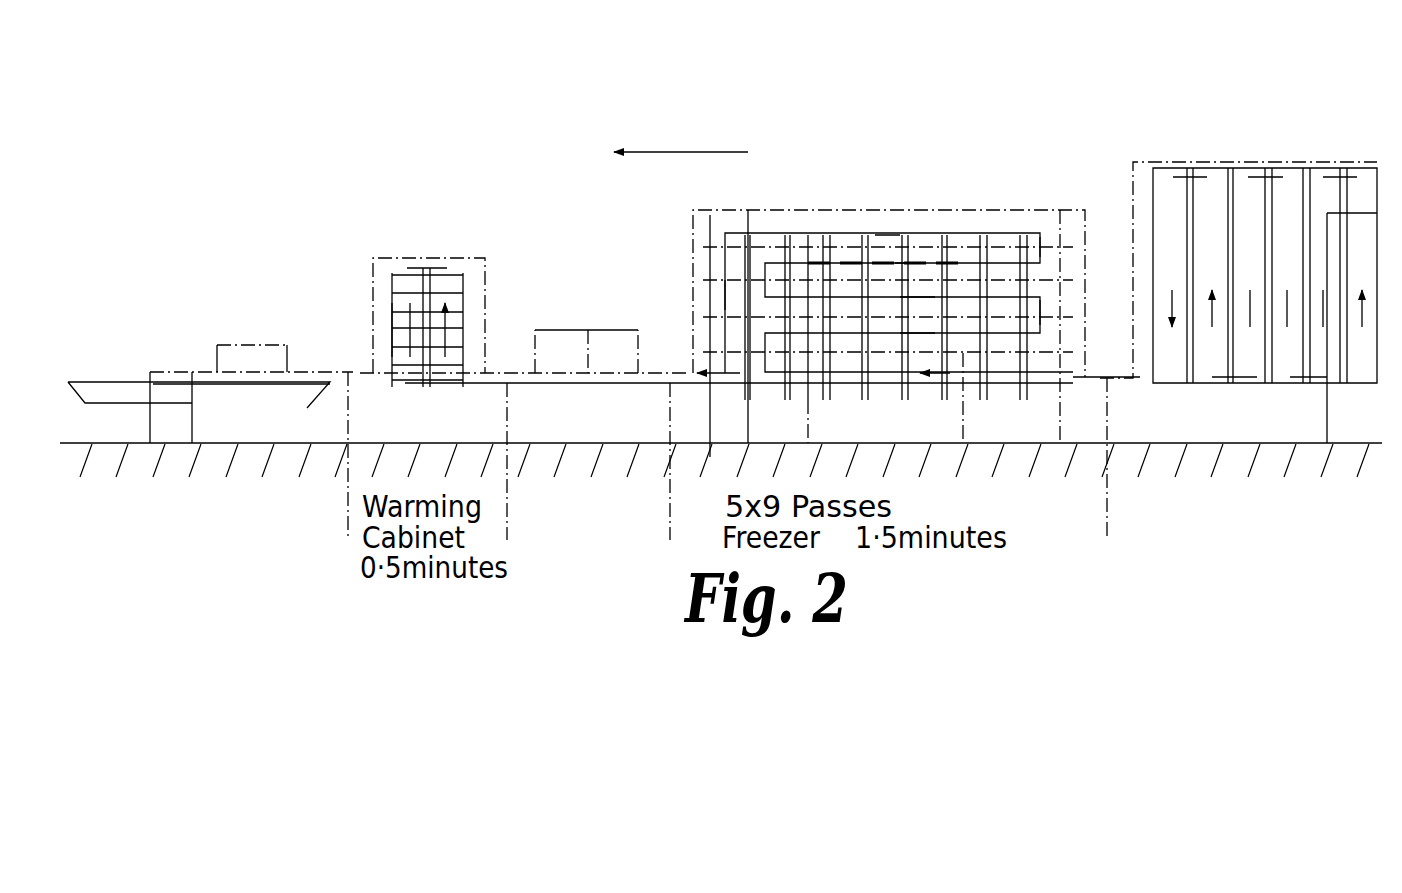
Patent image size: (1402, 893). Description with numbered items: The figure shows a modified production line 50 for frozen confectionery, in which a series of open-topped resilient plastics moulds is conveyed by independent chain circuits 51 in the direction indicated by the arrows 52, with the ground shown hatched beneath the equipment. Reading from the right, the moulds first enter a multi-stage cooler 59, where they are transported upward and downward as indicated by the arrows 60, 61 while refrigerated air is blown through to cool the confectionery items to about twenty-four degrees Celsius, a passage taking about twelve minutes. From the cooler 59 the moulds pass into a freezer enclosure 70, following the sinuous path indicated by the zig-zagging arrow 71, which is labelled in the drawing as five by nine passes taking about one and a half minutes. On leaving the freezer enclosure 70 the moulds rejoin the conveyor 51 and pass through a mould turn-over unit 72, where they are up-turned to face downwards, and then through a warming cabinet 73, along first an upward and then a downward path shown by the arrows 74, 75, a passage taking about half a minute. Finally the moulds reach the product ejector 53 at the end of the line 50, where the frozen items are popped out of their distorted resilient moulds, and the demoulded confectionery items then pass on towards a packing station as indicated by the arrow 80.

The modified line 50 is at (910, 130).
The chain circuits 51 is at (655, 370).
The arrows 52 is at (690, 152).
The product ejector 53 is at (255, 340).
The multi-stage cooler 59 is at (1235, 242).
The arrows 60 is at (1172, 307).
The arrows 61 is at (1212, 313).
The freezer enclosure 70 is at (947, 208).
The zig-zagging arrow 71 is at (813, 233).
The mould turn-over unit 72 is at (558, 327).
The warming cabinet 73 is at (407, 269).
The arrows 74 is at (447, 322).
The arrows 75 is at (405, 322).
The arrow 80 is at (78, 363).